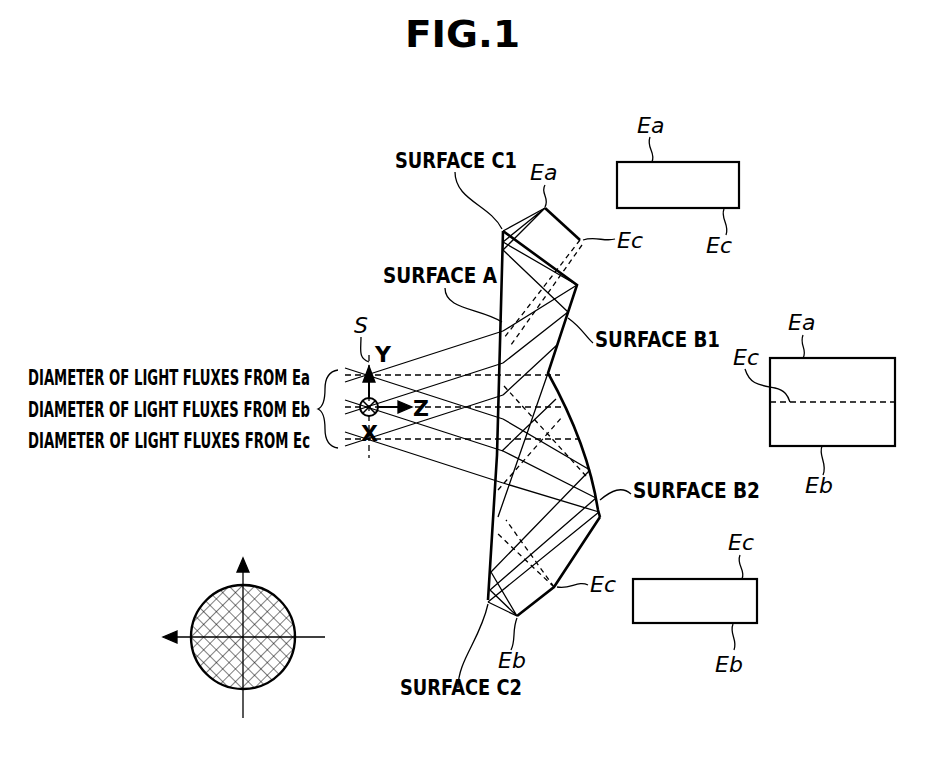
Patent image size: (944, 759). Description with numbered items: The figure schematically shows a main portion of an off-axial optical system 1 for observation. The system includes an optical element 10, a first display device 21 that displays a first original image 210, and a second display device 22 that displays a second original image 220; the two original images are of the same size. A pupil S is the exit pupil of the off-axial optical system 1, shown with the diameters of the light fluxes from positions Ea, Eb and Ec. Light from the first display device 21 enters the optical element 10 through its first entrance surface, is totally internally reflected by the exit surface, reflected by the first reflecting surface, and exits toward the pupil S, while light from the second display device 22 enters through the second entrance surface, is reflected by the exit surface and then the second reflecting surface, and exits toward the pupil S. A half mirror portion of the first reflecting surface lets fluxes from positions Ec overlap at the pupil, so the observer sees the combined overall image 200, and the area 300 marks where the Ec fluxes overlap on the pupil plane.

The off-axial optical system 1 is at (590, 416).
The optical element 10 is at (580, 430).
The first display device 21 is at (562, 224).
The second display device 22 is at (536, 607).
The overall image 200 is at (867, 368).
The first original image 210 is at (714, 175).
The second original image 220 is at (662, 623).
The area 300 is at (213, 594).